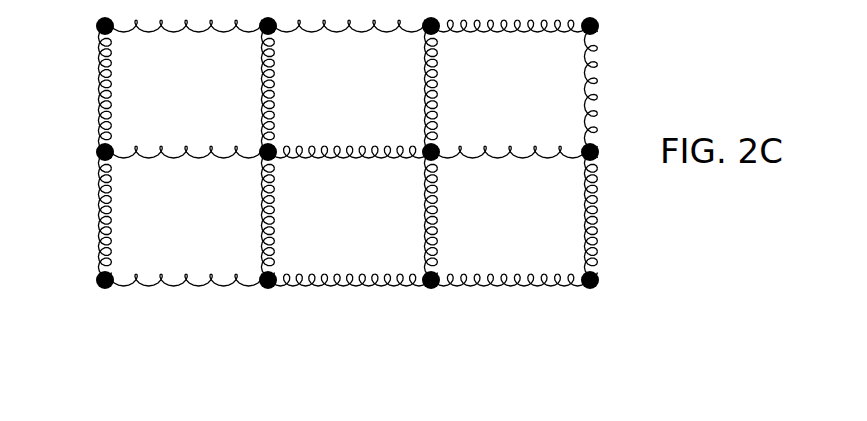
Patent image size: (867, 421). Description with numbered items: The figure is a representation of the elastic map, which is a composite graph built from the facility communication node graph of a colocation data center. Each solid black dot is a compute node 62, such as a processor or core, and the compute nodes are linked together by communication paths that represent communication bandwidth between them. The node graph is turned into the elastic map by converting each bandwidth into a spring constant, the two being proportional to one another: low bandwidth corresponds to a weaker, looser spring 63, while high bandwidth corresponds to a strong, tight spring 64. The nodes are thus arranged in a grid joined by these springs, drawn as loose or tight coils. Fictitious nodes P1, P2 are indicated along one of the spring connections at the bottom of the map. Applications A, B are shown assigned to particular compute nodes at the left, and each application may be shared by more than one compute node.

The compute node 62 is at (598, 30).
The spring 63 is at (183, 33).
The spring 64 is at (328, 160).
The application A is at (97, 29).
The application B is at (97, 153).
The fictitious node P1 is at (456, 293).
The fictitious node P2 is at (503, 293).